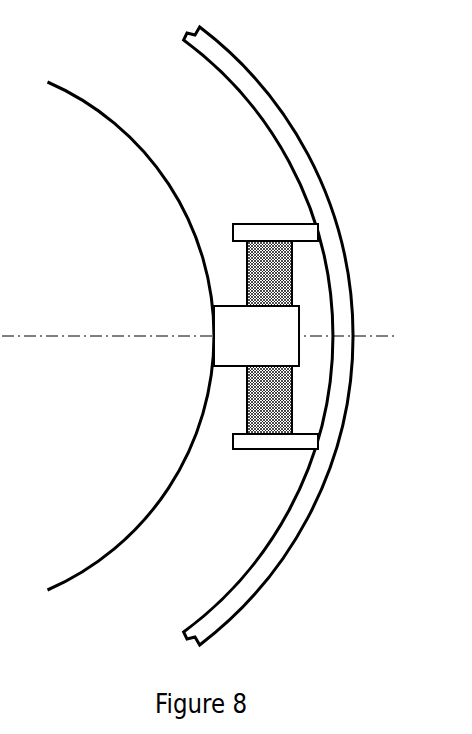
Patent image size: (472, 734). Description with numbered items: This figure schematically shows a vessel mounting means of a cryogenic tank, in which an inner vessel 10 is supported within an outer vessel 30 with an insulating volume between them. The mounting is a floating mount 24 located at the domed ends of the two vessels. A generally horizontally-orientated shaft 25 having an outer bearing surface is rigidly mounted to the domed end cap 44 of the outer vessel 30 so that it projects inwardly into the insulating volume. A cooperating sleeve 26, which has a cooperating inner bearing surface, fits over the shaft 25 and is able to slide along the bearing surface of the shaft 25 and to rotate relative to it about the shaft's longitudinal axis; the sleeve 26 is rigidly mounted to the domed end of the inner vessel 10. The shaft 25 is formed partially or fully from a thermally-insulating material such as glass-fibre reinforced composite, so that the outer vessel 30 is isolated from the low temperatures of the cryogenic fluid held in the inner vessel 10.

The inner vessel 10 is at (123, 336).
The outer vessel 30 is at (296, 336).
The end cap 44 is at (296, 336).
The floating mount 24 is at (247, 363).
The shaft 25 is at (344, 337).
The sleeve 26 is at (176, 309).